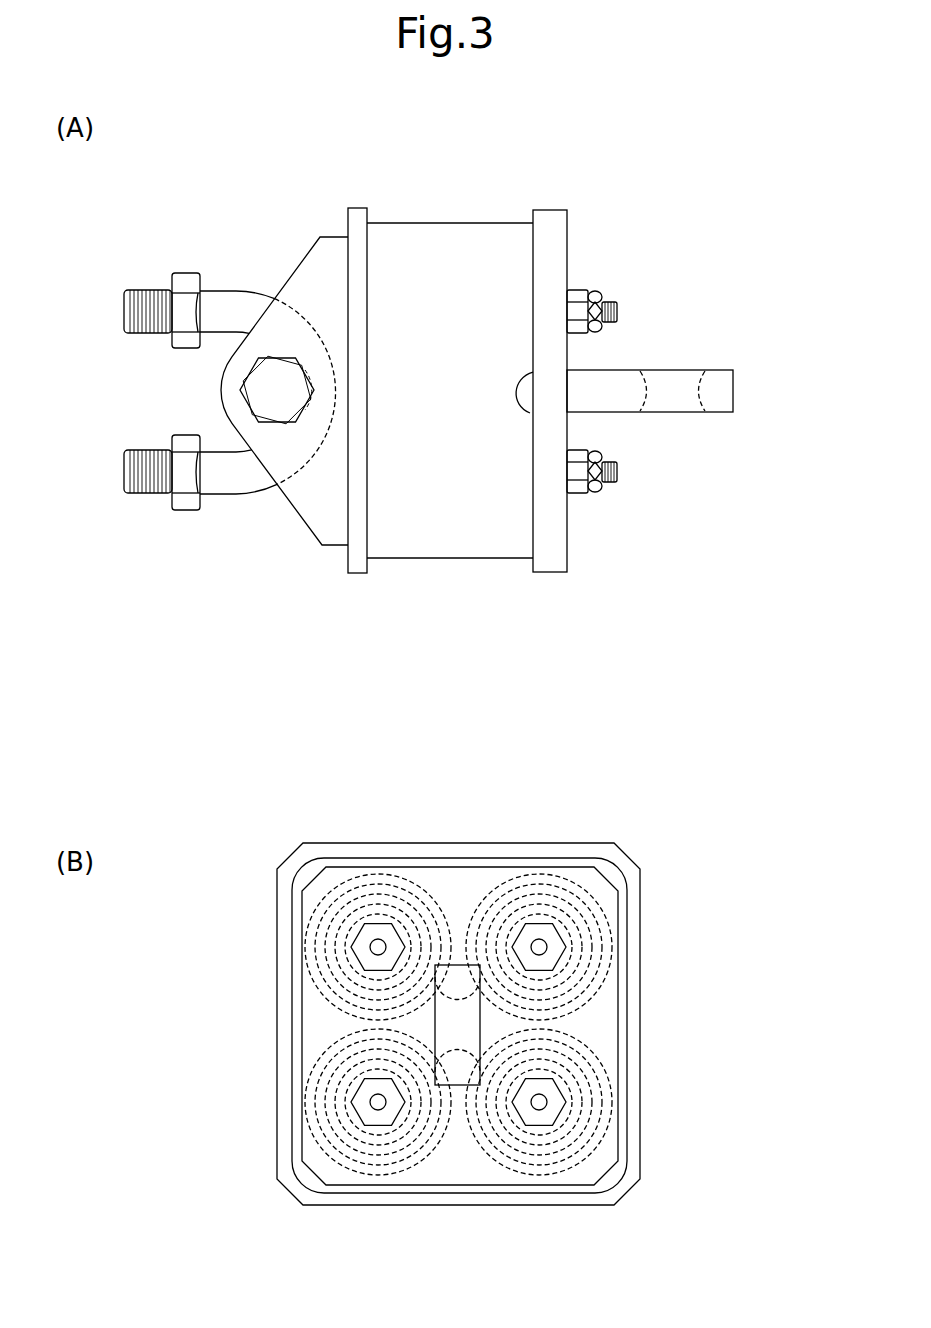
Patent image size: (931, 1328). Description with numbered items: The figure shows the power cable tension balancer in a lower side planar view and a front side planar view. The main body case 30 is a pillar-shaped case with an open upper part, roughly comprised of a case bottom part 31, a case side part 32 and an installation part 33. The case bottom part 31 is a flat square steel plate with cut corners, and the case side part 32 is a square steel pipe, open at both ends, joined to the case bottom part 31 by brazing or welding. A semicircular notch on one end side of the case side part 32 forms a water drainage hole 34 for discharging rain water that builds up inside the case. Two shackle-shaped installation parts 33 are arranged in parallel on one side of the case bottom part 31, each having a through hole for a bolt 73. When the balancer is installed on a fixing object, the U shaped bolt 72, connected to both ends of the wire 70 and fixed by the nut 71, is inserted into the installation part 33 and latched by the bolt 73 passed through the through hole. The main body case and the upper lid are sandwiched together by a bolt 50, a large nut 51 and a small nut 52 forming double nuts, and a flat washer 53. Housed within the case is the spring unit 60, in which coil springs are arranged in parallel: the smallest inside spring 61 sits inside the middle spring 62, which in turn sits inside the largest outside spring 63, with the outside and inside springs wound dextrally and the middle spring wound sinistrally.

The main body case 30 is at (377, 460).
The case bottom part 31 is at (357, 565).
The case side part 32 is at (403, 545).
The installation part 33 is at (300, 500).
The water drainage hole 34 is at (525, 397).
The bolt 50 is at (618, 312).
The large nut 51 is at (592, 298).
The small nut 52 is at (600, 306).
The flat washer 53 is at (577, 295).
The spring unit 60 is at (538, 1021).
The inside spring 61 is at (597, 957).
The middle spring 62 is at (592, 933).
The outside spring 63 is at (588, 900).
The wire 70 is at (148, 300).
The nut 71 is at (190, 282).
The U shaped bolt 72 is at (252, 305).
The bolt 73 is at (265, 383).